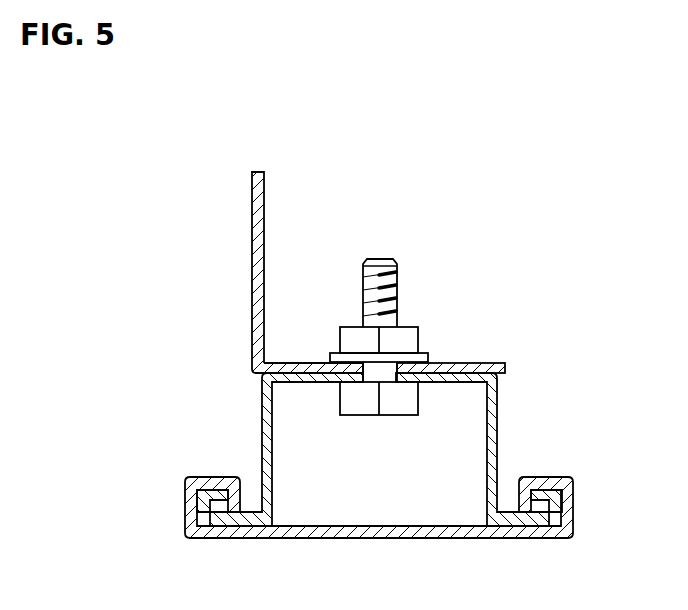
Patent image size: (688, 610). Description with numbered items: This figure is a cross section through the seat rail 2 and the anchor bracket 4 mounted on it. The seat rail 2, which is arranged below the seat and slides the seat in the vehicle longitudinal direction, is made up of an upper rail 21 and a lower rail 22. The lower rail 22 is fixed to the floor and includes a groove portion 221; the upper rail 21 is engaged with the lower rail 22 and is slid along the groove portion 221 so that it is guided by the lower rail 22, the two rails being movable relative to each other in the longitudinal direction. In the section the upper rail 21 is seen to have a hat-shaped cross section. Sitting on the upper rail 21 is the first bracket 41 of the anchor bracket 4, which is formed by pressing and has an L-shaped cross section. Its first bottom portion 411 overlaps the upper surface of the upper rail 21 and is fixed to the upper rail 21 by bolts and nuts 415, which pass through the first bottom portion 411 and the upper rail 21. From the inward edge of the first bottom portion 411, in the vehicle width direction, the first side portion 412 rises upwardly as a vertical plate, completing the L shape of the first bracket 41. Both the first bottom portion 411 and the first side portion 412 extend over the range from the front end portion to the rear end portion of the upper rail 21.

The seat rail 2 is at (408, 481).
The upper rail 21 is at (497, 418).
The lower rail 22 is at (408, 533).
The groove portion 221 is at (384, 526).
The anchor bracket 4 is at (347, 293).
The first bracket 41 is at (347, 272).
The first bottom portion 411 is at (483, 362).
The first side portion 412 is at (252, 211).
The bolts and nuts 415 is at (398, 263).